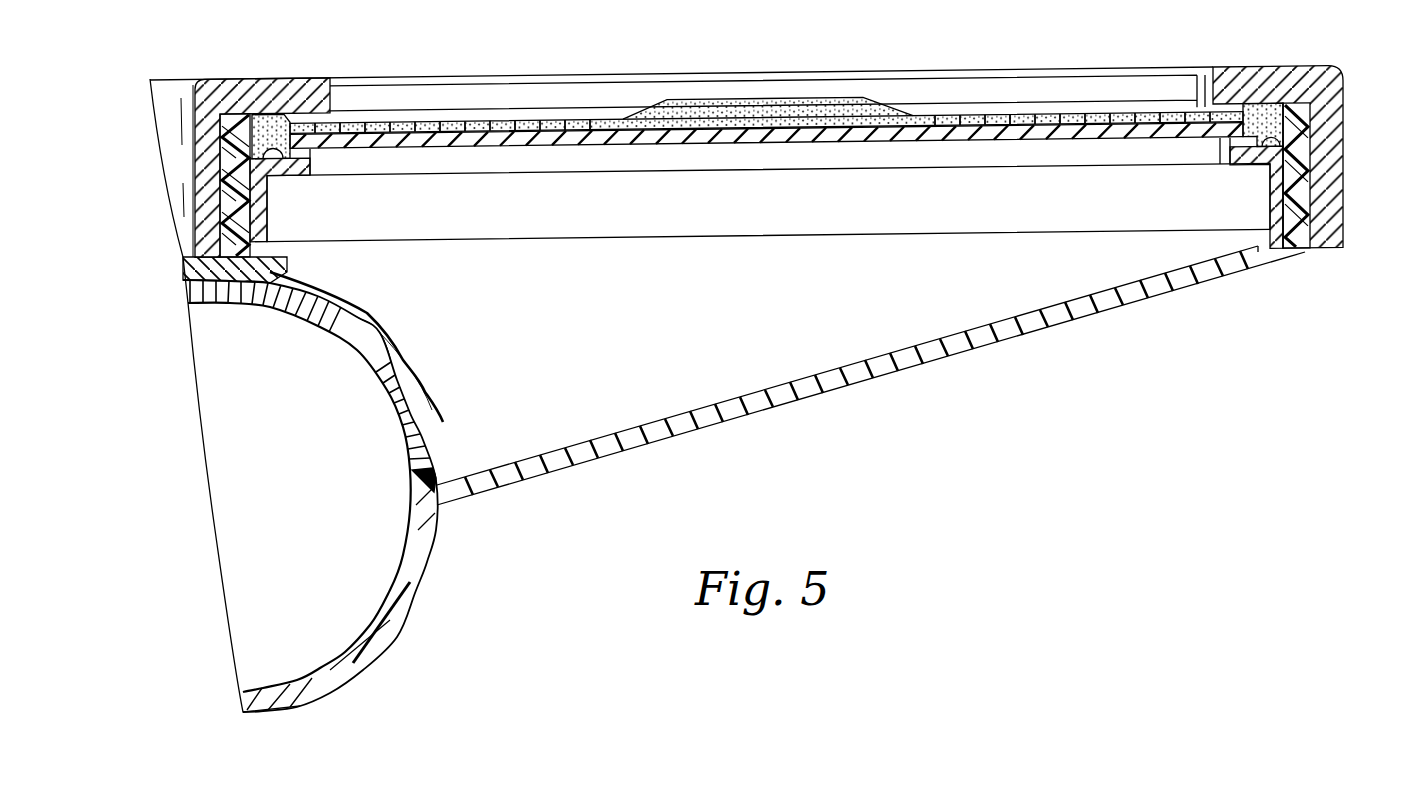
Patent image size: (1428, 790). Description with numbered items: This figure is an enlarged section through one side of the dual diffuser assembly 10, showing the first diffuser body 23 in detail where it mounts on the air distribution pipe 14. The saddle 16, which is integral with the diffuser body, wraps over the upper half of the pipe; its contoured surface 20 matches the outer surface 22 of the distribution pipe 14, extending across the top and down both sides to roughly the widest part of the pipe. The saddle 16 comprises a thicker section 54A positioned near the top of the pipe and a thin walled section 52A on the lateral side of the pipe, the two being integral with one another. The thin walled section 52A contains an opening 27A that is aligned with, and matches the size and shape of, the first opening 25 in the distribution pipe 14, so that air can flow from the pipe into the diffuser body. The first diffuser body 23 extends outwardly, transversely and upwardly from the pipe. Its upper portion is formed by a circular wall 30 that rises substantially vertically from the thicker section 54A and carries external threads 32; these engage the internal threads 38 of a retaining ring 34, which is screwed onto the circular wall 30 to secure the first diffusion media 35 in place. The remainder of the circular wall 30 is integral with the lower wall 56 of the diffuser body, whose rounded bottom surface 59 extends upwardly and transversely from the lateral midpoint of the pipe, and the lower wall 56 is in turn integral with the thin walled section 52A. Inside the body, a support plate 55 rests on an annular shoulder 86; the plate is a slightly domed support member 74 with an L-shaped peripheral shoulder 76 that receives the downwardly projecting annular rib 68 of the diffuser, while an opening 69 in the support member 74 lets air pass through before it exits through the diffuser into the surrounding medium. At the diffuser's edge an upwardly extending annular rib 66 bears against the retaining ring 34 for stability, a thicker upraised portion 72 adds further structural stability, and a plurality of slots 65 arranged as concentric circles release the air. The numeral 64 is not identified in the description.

The diffuser assembly 10 is at (960, 362).
The air distribution pipe 14 is at (408, 572).
The saddle 16 is at (410, 357).
The contoured surface 20 is at (443, 417).
The outer surface 22 is at (424, 463).
The first diffuser body 23 is at (640, 392).
The first opening 25 is at (370, 368).
The opening 27A is at (384, 335).
The circular wall 30 is at (1310, 180).
The external threads 32 is at (1297, 100).
The retaining ring 34 is at (1337, 90).
The first diffusion media 35 is at (492, 134).
The internal threads 38 is at (1303, 148).
The thin walled section 52A is at (418, 383).
The thicker section 54A is at (260, 252).
The support plate 55 is at (1018, 118).
The lower wall 56 is at (793, 387).
The bottom surface 59 is at (874, 389).
The bezel frame 64 is at (1228, 68).
The slots 65 is at (408, 122).
The upwardly extending annular rib 66 is at (1265, 103).
The downwardly projecting annular rib 68 is at (1243, 149).
The opening 69 is at (735, 134).
The upraised portion 72 is at (780, 103).
The support member 74 is at (610, 120).
The L-shaped peripheral shoulder 76 is at (285, 178).
The annular shoulder 86 is at (1262, 228).